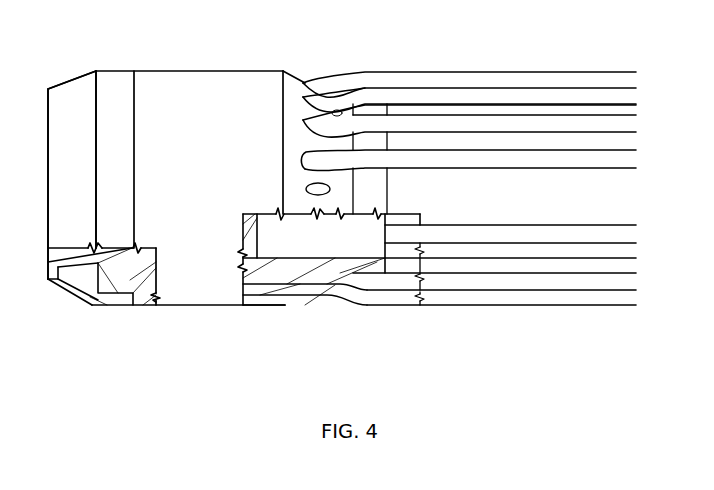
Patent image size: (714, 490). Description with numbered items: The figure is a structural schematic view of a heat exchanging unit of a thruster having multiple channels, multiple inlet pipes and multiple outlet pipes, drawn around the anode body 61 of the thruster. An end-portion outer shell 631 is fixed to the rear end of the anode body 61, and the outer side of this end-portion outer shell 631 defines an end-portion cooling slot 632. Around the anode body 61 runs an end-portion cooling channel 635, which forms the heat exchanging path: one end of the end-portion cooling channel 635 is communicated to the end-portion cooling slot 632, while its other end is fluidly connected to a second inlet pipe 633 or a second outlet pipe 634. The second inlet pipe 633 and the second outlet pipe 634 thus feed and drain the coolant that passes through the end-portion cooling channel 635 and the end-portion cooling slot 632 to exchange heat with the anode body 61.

The anode body 61 is at (185, 126).
The end-portion outer shell 631 is at (68, 126).
The end-portion cooling slot 632 is at (85, 278).
The second inlet pipe 633 is at (368, 80).
The second outlet pipe 634 is at (486, 293).
The end-portion cooling channel 635 is at (286, 291).